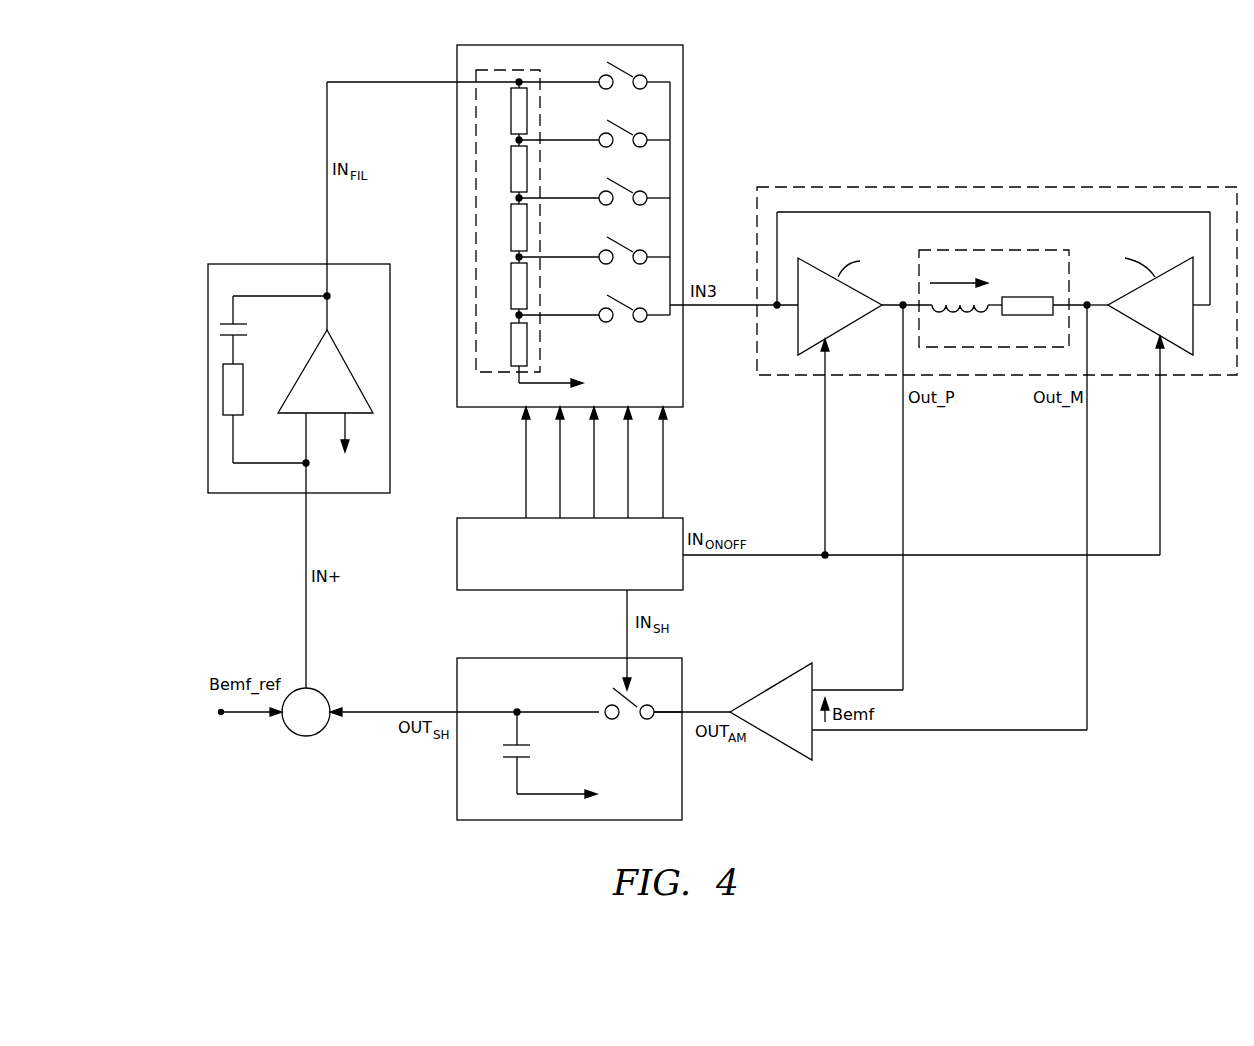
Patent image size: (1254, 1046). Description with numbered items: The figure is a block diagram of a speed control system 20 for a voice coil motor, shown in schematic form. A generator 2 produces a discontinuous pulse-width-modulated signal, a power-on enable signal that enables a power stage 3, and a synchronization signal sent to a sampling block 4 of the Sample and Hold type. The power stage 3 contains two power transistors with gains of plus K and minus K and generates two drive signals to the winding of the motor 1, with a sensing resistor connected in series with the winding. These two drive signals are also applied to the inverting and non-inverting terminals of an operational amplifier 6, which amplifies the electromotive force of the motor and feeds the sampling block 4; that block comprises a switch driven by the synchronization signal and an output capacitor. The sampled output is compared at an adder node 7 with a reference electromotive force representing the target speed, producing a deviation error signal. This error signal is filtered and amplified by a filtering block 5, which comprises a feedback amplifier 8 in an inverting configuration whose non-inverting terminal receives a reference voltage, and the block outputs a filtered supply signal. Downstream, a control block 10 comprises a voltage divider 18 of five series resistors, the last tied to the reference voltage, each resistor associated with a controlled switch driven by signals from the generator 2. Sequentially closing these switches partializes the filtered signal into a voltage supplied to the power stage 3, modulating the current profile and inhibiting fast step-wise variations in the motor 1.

The VCM motor 1 is at (1032, 250).
The PWM signal generator 2 is at (573, 587).
The power stage 3 is at (1027, 187).
The sampling block 4 is at (682, 773).
The filtering block 5 is at (208, 380).
The operational amplifier 6 is at (783, 727).
The adder node 7 is at (324, 694).
The feedback amplifier 8 is at (333, 380).
The control block 10 is at (457, 213).
The voltage divider 18 is at (477, 130).
The speed control system 20 is at (255, 194).